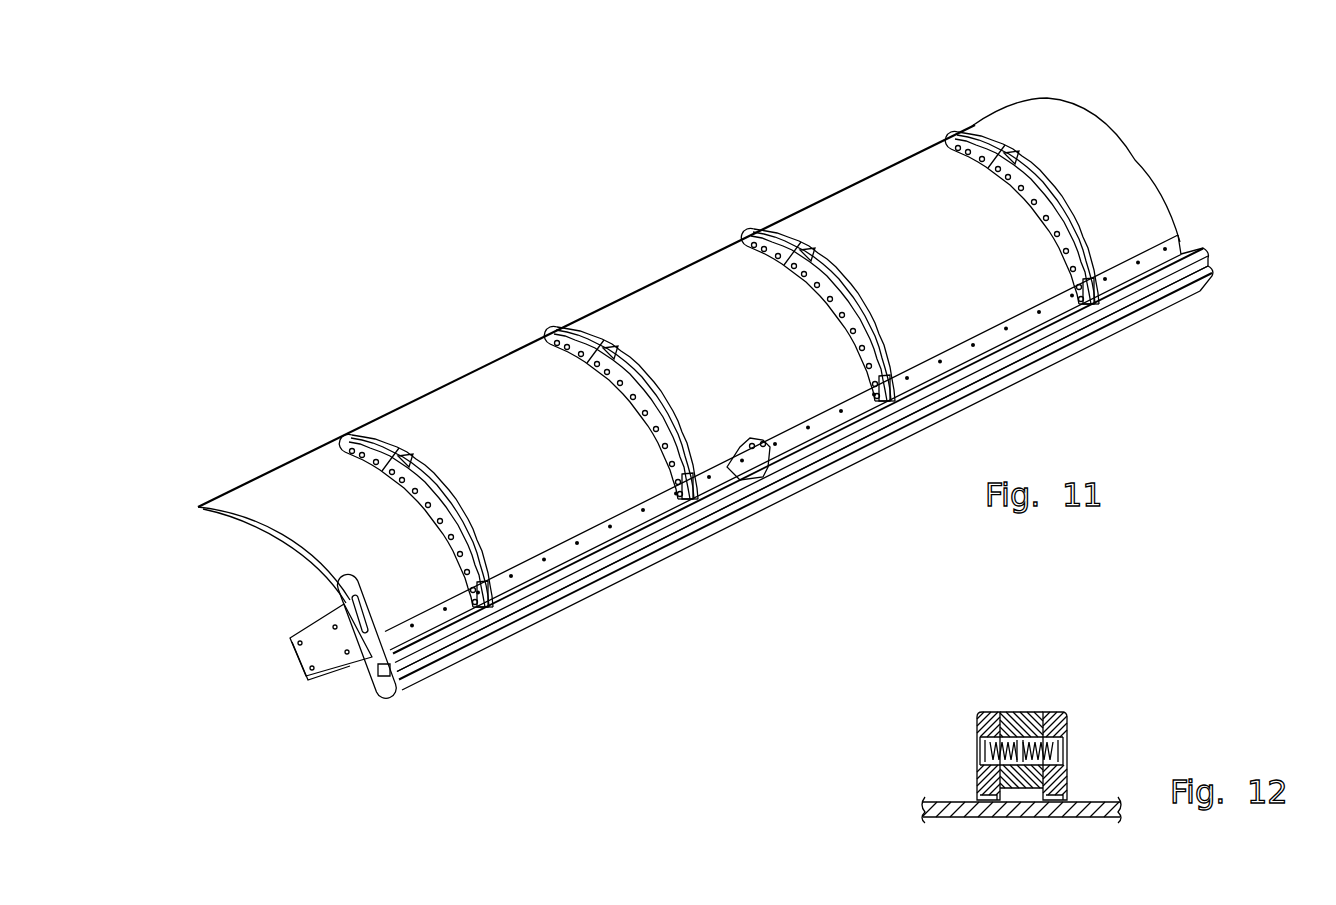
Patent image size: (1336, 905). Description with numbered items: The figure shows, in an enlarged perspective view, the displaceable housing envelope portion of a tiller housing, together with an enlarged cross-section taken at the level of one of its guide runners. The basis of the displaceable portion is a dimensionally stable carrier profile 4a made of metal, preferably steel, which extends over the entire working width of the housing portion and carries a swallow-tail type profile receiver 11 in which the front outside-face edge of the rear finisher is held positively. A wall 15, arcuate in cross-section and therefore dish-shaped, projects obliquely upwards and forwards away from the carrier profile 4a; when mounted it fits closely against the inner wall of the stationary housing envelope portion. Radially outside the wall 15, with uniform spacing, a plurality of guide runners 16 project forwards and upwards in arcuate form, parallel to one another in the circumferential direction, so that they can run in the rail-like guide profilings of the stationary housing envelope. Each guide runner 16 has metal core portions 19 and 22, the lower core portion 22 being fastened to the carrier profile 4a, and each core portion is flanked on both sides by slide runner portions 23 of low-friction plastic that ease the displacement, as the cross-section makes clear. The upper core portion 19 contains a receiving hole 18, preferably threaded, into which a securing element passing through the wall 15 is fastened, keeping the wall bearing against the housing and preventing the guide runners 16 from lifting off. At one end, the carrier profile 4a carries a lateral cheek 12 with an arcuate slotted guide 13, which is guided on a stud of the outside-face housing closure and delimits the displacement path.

In FIG. 11, the carrier profile 4a is at (560, 588).
In FIG. 11, the profile receiver 11 is at (458, 633).
In FIG. 11, the lateral cheek 12 is at (372, 657).
In FIG. 11, the slotted guide 13 is at (343, 593).
In FIG. 11, the wall 15 is at (487, 385).
In FIG. 12, the wall 15 is at (948, 802).
In FIG. 11, the guide runner 16 is at (712, 341).
In FIG. 11, the receiving hole 18 is at (363, 435).
In FIG. 11, the core portion 19 is at (370, 445).
In FIG. 11, the core portion 22 is at (453, 517).
In FIG. 12, the core portion 22 is at (1020, 712).
In FIG. 11, the slide runner portion 23 is at (433, 480).
In FIG. 12, the slide runner portion 23 is at (987, 712).